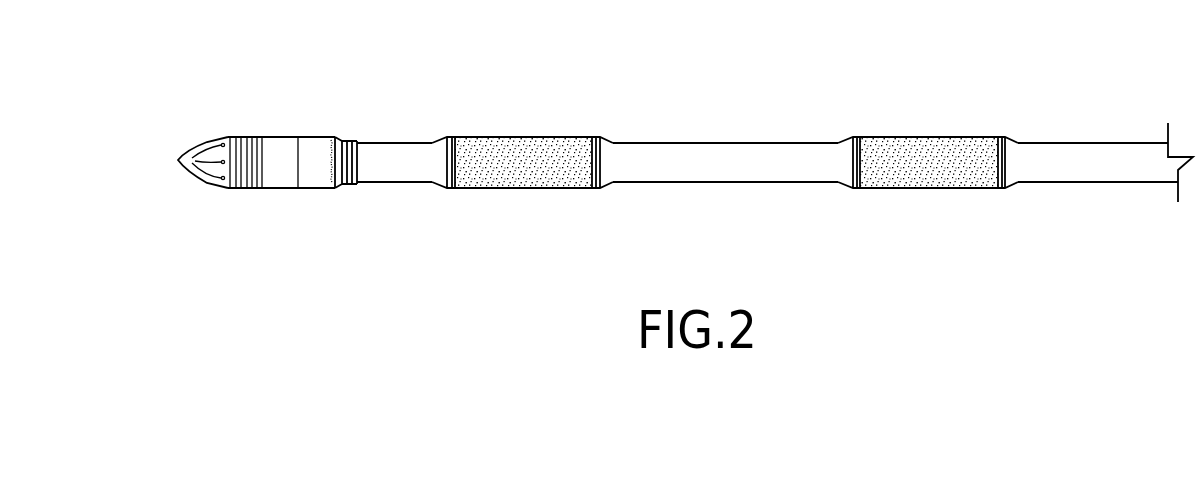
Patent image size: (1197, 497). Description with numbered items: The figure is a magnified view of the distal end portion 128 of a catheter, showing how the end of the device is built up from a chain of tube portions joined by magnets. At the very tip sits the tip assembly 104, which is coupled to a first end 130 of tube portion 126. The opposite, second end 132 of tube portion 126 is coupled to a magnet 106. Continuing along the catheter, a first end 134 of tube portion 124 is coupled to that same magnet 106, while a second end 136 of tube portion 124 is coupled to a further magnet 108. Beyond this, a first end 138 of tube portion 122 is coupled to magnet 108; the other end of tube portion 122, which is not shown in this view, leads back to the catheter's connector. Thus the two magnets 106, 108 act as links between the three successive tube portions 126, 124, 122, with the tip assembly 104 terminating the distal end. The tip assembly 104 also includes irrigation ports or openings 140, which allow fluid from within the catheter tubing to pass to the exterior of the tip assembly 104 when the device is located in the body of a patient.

The tip assembly 104 is at (275, 137).
The magnet 106 is at (527, 137).
The magnet 108 is at (932, 140).
The tube portion 122 is at (1090, 183).
The tube portion 124 is at (723, 183).
The tube portion 126 is at (393, 183).
The distal end portion 128 is at (682, 58).
The first end 130 is at (350, 141).
The second end 132 is at (441, 143).
The first end 134 is at (603, 140).
The second end 136 is at (845, 140).
The first end 138 is at (1013, 140).
The irrigation ports 140 is at (180, 160).